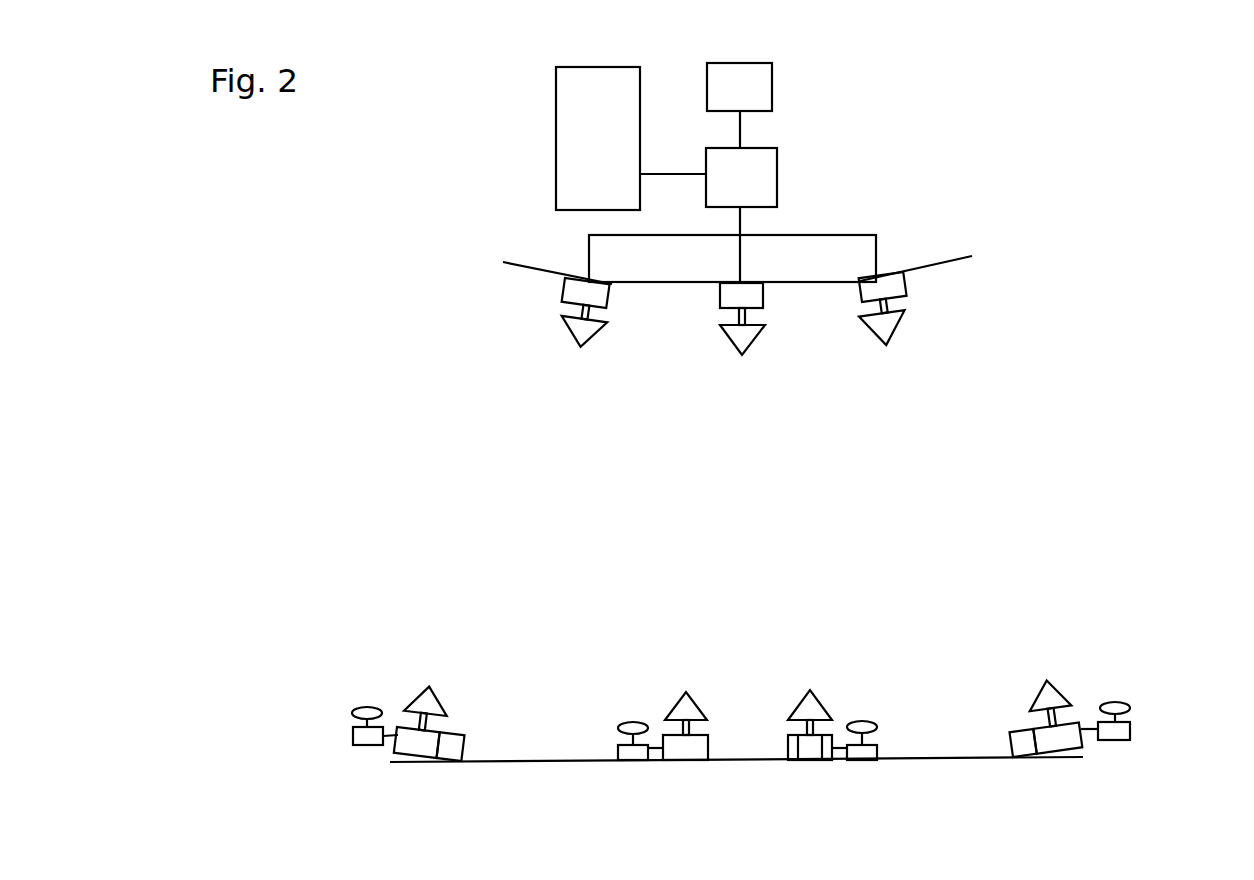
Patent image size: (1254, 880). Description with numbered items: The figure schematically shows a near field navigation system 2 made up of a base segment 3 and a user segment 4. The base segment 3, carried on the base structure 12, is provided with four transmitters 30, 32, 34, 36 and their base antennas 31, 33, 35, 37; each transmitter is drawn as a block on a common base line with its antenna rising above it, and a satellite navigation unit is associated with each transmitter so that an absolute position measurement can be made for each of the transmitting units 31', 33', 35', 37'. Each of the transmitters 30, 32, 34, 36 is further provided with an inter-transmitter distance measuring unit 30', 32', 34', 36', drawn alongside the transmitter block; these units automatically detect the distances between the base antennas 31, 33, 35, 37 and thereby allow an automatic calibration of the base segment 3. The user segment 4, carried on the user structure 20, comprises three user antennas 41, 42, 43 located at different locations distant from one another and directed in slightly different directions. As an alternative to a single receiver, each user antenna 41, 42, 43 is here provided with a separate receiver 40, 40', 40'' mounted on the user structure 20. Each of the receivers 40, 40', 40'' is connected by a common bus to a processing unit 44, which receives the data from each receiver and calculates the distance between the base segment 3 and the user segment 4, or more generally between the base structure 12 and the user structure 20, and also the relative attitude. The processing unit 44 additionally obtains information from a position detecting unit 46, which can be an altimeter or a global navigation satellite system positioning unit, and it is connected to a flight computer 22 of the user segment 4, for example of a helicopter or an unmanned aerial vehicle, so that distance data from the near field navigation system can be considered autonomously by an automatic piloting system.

The system 2 is at (977, 108).
The base segment 3 is at (1062, 538).
The user segment 4 is at (447, 335).
The base structure 12 is at (1153, 592).
The user structure 20 is at (973, 283).
The flight computer 22 is at (575, 138).
The transmitter 30 is at (417, 780).
The inter-transmitter distance measuring unit 30' is at (469, 780).
The base antenna 31 is at (411, 674).
The transmitting unit 31' is at (479, 653).
The transmitter 32 is at (796, 724).
The inter-transmitter distance measuring unit 32' is at (839, 789).
The base antenna 33 is at (800, 672).
The transmitting unit 33' is at (853, 647).
The transmitter 34 is at (1064, 778).
The inter-transmitter distance measuring unit 34' is at (1012, 781).
The base antenna 35 is at (1065, 666).
The transmitting unit 35' is at (1004, 645).
The transmitter 36 is at (702, 724).
The inter-transmitter distance measuring unit 36' is at (658, 789).
The base antenna 37 is at (691, 672).
The transmitting unit 37' is at (640, 646).
The receiver 40 is at (545, 300).
The receiver 40' is at (713, 310).
The user antenna 41 is at (577, 333).
The user antenna 42 is at (737, 335).
The user antenna 43 is at (892, 328).
The processing unit 44 is at (752, 183).
The position detecting unit 46 is at (750, 87).